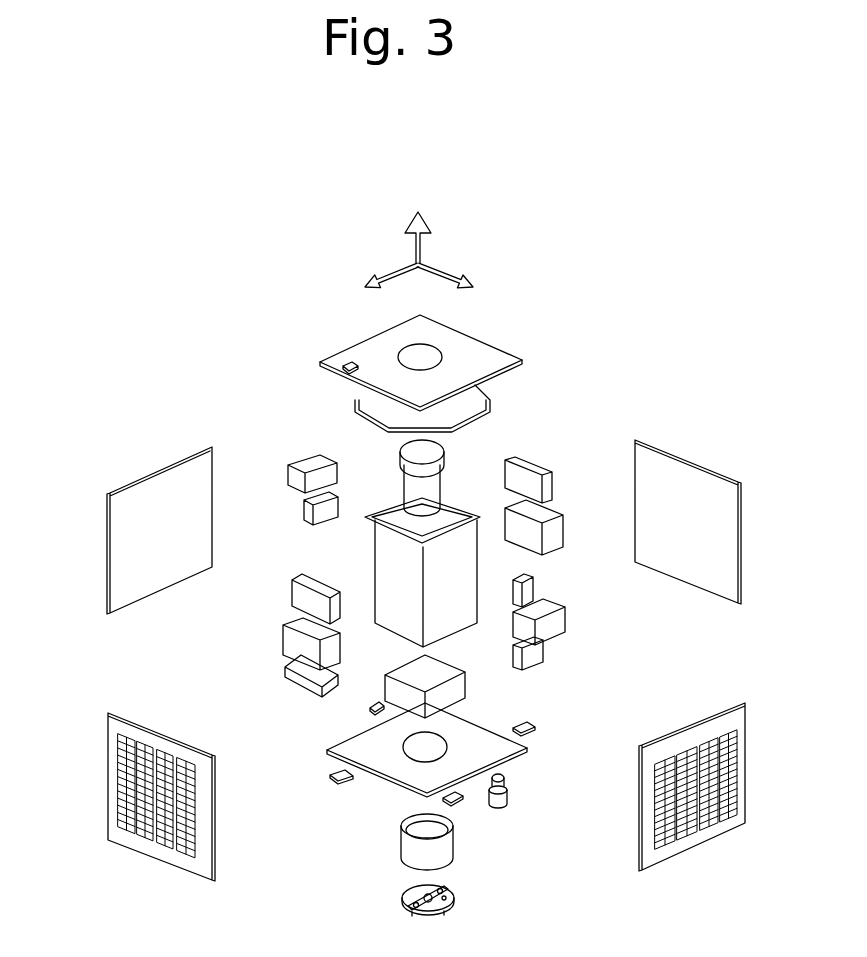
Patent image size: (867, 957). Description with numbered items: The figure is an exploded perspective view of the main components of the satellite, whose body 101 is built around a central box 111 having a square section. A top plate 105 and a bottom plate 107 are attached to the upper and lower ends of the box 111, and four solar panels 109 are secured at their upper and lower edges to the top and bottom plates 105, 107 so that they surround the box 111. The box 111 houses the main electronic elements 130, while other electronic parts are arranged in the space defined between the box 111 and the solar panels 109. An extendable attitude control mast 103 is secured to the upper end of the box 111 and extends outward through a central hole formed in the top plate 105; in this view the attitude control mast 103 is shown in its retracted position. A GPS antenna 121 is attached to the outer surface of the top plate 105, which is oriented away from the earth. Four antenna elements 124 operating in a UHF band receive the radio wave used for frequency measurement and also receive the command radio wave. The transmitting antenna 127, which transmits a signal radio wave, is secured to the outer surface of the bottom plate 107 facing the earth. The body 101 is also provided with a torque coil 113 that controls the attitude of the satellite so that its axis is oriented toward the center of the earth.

The body 101 is at (98, 261).
The attitude control mast 103 is at (413, 485).
The top plate 105 is at (485, 352).
The bottom plate 107 is at (323, 748).
The solar panels 109 is at (157, 472).
The box 111 is at (450, 508).
The torque coil 113 is at (525, 370).
The GPS antenna 121 is at (335, 355).
The antenna elements 124 is at (363, 720).
The antenna (transmitting device) 127 is at (510, 797).
The main electronic elements 130 is at (450, 692).